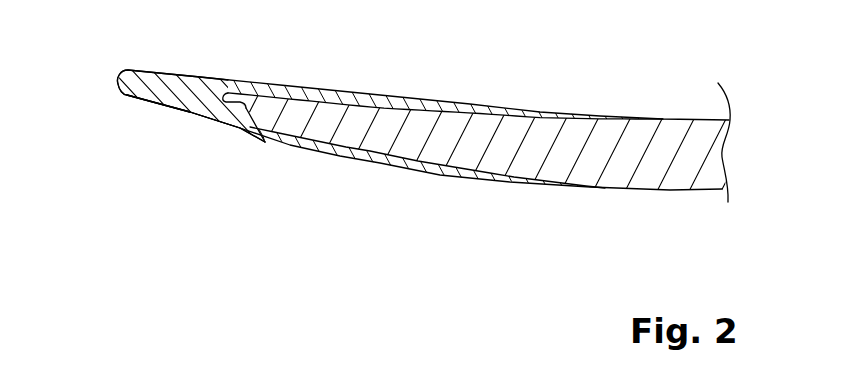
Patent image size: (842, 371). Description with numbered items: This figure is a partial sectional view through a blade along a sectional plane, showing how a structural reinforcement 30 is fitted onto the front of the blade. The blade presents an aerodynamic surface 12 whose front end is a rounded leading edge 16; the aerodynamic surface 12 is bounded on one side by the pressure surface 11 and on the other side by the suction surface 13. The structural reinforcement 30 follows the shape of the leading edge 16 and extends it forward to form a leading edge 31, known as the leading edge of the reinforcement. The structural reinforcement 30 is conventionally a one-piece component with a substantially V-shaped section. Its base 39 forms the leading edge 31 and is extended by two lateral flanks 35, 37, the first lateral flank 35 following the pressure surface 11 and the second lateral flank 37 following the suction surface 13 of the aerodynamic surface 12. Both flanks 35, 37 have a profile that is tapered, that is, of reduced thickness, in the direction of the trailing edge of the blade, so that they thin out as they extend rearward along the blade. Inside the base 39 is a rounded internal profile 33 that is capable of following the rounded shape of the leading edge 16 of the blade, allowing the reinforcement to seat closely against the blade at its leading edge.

The pressure surface 11 is at (695, 119).
The aerodynamic surface 12 is at (531, 156).
The suction surface 13 is at (658, 192).
The leading edge 16 is at (205, 95).
The structural reinforcement 30 is at (187, 119).
The leading edge of the reinforcement 31 is at (118, 82).
The rounded internal profile 33 is at (238, 103).
The lateral flank 35 is at (447, 96).
The lateral flank 37 is at (374, 164).
The base 39 is at (153, 90).